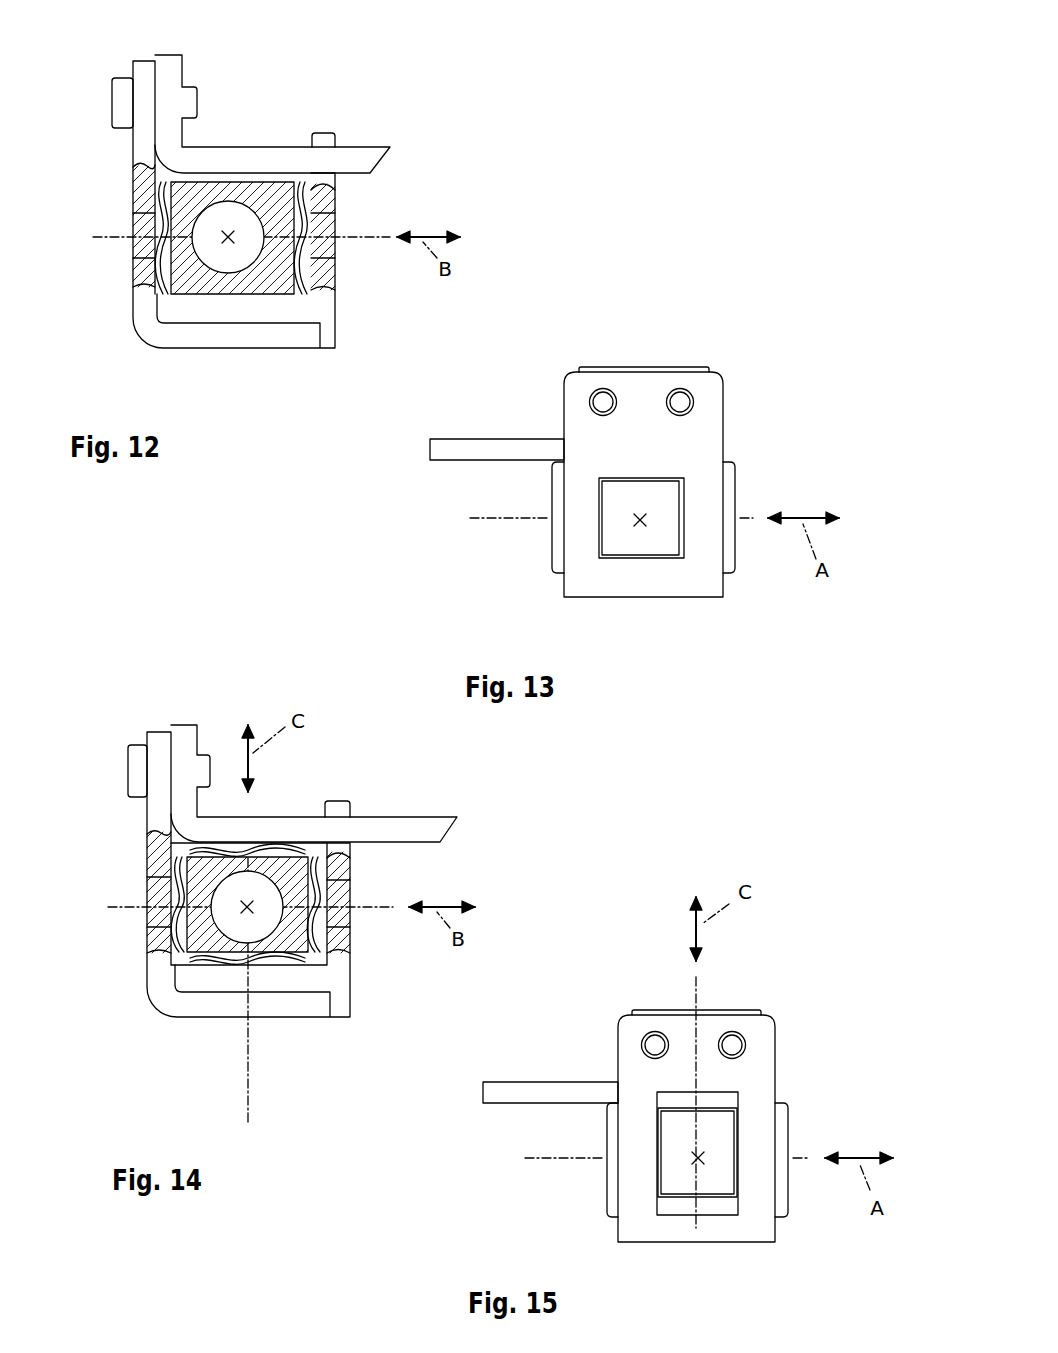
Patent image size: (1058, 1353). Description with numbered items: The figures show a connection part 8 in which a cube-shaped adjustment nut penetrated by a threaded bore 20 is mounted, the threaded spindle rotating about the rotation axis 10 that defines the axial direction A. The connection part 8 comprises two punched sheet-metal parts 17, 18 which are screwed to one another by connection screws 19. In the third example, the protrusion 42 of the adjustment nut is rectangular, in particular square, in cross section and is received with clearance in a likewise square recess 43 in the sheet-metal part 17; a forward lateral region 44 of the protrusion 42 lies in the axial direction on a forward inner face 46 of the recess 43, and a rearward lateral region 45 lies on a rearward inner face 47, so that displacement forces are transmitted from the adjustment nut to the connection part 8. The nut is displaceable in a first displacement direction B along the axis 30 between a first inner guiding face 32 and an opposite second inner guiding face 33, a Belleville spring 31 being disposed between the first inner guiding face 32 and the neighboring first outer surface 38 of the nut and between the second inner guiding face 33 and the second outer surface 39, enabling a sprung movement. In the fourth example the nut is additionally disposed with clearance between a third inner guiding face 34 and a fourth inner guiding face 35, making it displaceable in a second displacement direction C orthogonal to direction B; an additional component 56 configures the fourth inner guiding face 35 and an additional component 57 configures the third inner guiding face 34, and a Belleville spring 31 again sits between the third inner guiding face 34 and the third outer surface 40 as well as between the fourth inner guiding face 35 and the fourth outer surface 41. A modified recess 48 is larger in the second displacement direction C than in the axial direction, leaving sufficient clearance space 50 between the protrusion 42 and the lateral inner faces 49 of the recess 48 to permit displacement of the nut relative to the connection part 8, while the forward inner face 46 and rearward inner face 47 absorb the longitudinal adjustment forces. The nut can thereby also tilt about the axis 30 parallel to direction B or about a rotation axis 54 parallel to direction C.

In FIG. 12, the connection part 8 is at (296, 99).
In FIG. 13, the connection part 8 is at (572, 330).
In FIG. 14, the connection part 8 is at (359, 734).
In FIG. 15, the connection part 8 is at (628, 967).
In FIG. 12, the rotation axis 10 is at (138, 205).
In FIG. 13, the rotation axis 10 is at (737, 518).
In FIG. 14, the rotation axis 10 is at (157, 880).
In FIG. 15, the rotation axis 10 is at (792, 1158).
In FIG. 12, the sheet-metal part 17 is at (150, 327).
In FIG. 13, the sheet-metal part 17 is at (703, 440).
In FIG. 14, the sheet-metal part 17 is at (162, 998).
In FIG. 15, the sheet-metal part 17 is at (756, 1040).
In FIG. 12, the sheet-metal part 18 is at (372, 165).
In FIG. 13, the sheet-metal part 18 is at (499, 452).
In FIG. 14, the sheet-metal part 18 is at (385, 832).
In FIG. 15, the sheet-metal part 18 is at (558, 1090).
In FIG. 12, the connection screws 19 is at (118, 88).
In FIG. 13, the connection screws 19 is at (601, 408).
In FIG. 14, the connection screws 19 is at (203, 767).
In FIG. 15, the connection screws 19 is at (666, 1047).
In FIG. 12, the threaded bore 20 is at (228, 237).
In FIG. 14, the threaded bore 20 is at (262, 890).
In FIG. 12, the axis 30 is at (112, 236).
In FIG. 13, the axis 30 is at (640, 520).
In FIG. 14, the axis 30 is at (123, 908).
In FIG. 15, the axis 30 is at (698, 1158).
In FIG. 12, the Belleville spring 31 is at (150, 207).
In FIG. 14, the Belleville spring 31 is at (165, 858).
In FIG. 12, the first inner guiding face 32 is at (160, 287).
In FIG. 14, the first inner guiding face 32 is at (178, 967).
In FIG. 12, the second inner guiding face 33 is at (308, 292).
In FIG. 14, the second inner guiding face 33 is at (320, 965).
In FIG. 14, the third inner guiding face 34 is at (322, 1020).
In FIG. 14, the fourth inner guiding face 35 is at (190, 852).
In FIG. 12, the first outer surface 38 is at (168, 296).
In FIG. 14, the first outer surface 38 is at (187, 963).
In FIG. 12, the second outer surface 39 is at (293, 290).
In FIG. 14, the second outer surface 39 is at (302, 965).
In FIG. 14, the third outer surface 40 is at (307, 968).
In FIG. 14, the fourth outer surface 41 is at (170, 777).
In FIG. 12, the protrusion 42 is at (132, 258).
In FIG. 13, the protrusion 42 is at (667, 499).
In FIG. 14, the protrusion 42 is at (145, 930).
In FIG. 15, the protrusion 42 is at (722, 1138).
In FIG. 12, the recess 43 is at (150, 214).
In FIG. 13, the recess 43 is at (683, 508).
In FIG. 14, the recess 43 is at (345, 935).
In FIG. 13, the forward lateral region 44 is at (673, 533).
In FIG. 15, the forward lateral region 44 is at (730, 1177).
In FIG. 13, the rearward lateral region 45 is at (608, 537).
In FIG. 15, the rearward lateral region 45 is at (665, 1177).
In FIG. 13, the forward inner face 46 is at (725, 578).
In FIG. 15, the forward inner face 46 is at (740, 1177).
In FIG. 13, the rearward inner face 47 is at (597, 523).
In FIG. 15, the rearward inner face 47 is at (657, 1165).
In FIG. 15, the modified recess 48 is at (657, 1212).
In FIG. 15, the lateral inner faces 49 is at (665, 1090).
In FIG. 14, the clearance space 50 is at (170, 875).
In FIG. 15, the clearance space 50 is at (718, 1104).
In FIG. 14, the rotation axis 54 is at (252, 811).
In FIG. 14, the additional component 56 is at (200, 850).
In FIG. 14, the additional component 57 is at (263, 983).